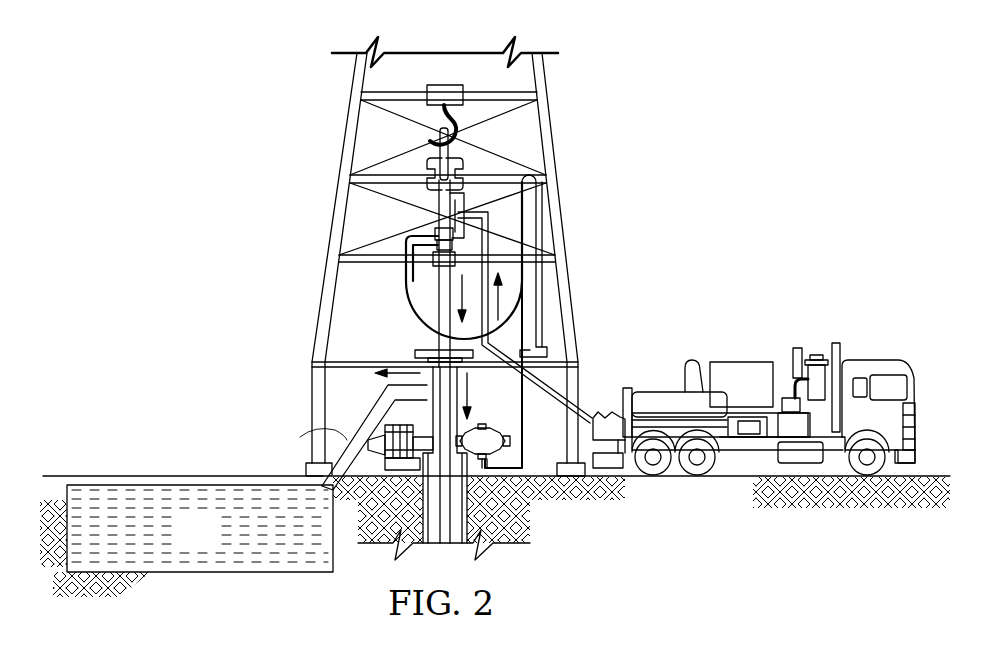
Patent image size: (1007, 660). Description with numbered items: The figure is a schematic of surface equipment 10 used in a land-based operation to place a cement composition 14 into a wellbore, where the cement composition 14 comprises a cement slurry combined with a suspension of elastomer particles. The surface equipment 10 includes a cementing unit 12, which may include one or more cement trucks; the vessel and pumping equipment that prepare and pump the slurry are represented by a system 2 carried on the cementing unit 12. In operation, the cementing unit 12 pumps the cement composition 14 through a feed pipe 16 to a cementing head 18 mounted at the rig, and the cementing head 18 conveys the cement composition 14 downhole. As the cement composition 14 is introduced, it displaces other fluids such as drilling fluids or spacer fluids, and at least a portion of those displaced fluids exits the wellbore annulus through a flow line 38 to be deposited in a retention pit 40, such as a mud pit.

The surface equipment 10 is at (136, 95).
The cementing head 18 is at (472, 165).
The cement composition 14 is at (458, 288).
The feed pipe 16 is at (533, 388).
The flow line 38 is at (353, 434).
The retention pit 40 is at (213, 543).
The system 2 is at (758, 364).
The cementing unit 12 is at (877, 360).